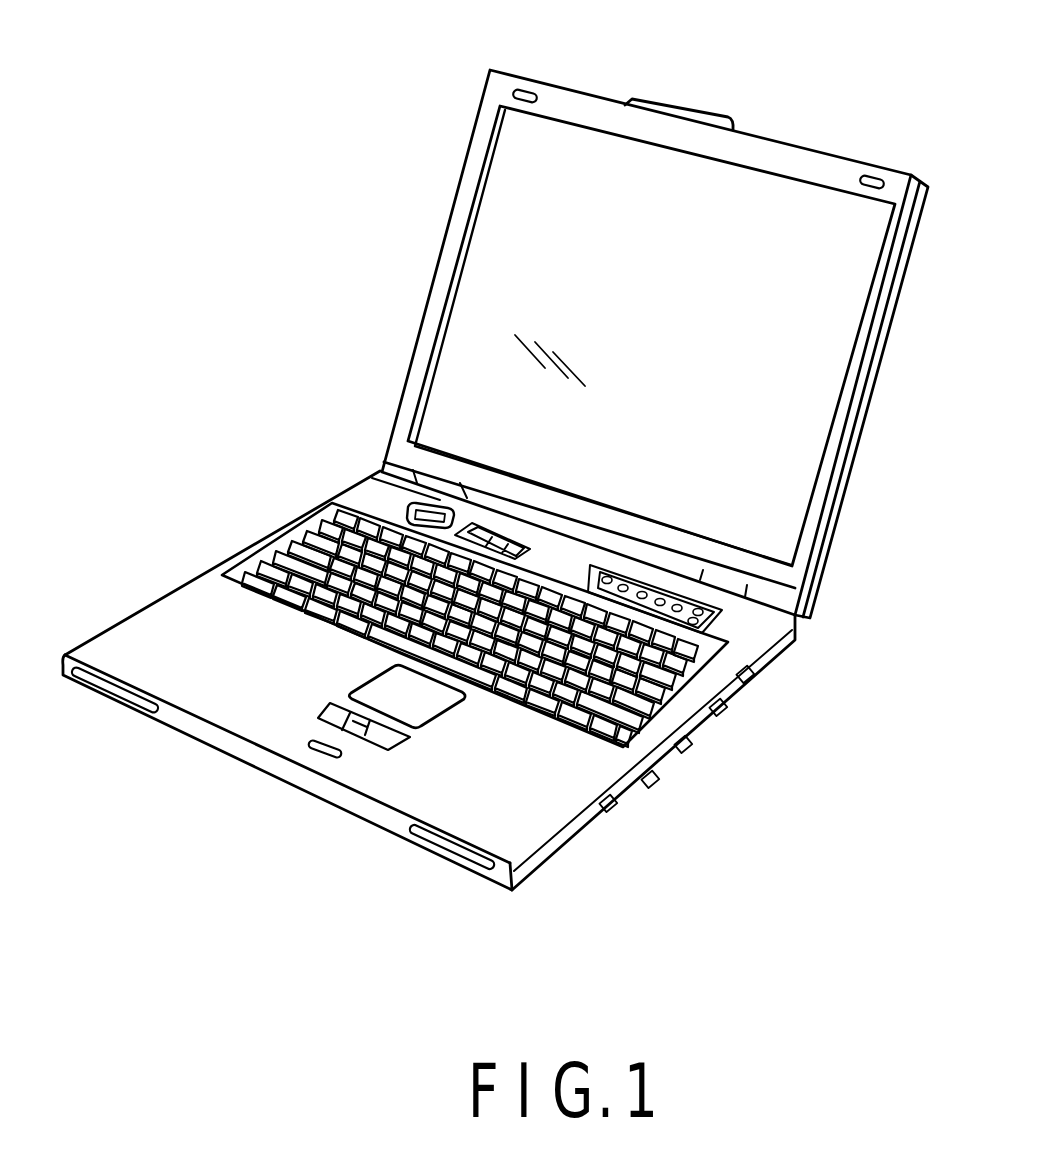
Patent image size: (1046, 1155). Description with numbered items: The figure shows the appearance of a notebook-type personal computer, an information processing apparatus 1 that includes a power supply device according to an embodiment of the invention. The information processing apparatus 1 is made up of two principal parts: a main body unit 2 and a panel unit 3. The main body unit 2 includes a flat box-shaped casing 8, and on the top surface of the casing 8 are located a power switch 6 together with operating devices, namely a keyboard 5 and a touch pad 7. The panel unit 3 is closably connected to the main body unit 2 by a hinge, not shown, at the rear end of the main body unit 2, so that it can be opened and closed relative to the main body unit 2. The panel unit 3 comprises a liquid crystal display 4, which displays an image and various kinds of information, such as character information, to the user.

The information processing apparatus 1 is at (376, 78).
The main body unit 2 is at (178, 588).
The panel unit 3 is at (633, 102).
The liquid crystal display 4 is at (510, 280).
The keyboard 5 is at (657, 693).
The power switch 6 is at (430, 513).
The touch pad 7 is at (420, 700).
The casing 8 is at (262, 685).